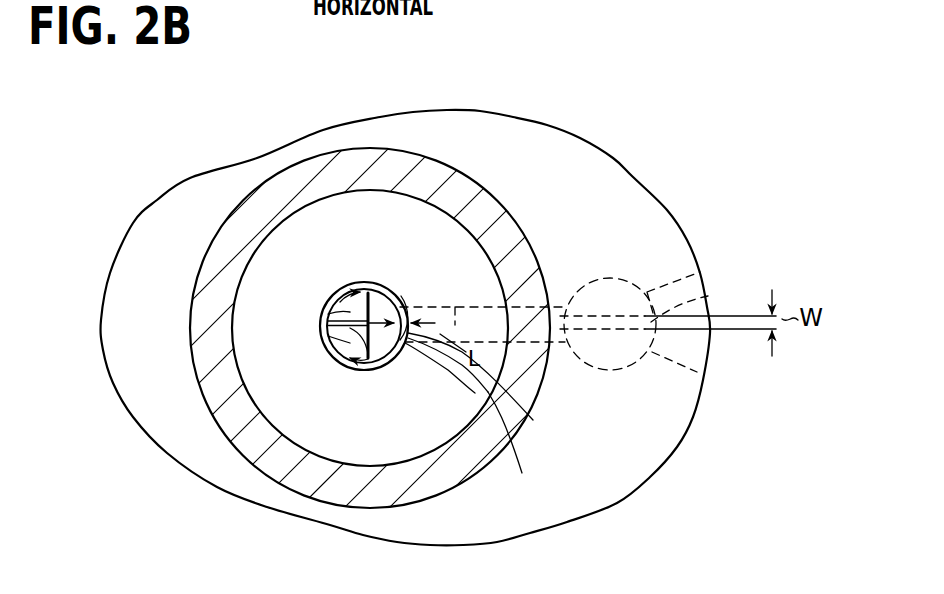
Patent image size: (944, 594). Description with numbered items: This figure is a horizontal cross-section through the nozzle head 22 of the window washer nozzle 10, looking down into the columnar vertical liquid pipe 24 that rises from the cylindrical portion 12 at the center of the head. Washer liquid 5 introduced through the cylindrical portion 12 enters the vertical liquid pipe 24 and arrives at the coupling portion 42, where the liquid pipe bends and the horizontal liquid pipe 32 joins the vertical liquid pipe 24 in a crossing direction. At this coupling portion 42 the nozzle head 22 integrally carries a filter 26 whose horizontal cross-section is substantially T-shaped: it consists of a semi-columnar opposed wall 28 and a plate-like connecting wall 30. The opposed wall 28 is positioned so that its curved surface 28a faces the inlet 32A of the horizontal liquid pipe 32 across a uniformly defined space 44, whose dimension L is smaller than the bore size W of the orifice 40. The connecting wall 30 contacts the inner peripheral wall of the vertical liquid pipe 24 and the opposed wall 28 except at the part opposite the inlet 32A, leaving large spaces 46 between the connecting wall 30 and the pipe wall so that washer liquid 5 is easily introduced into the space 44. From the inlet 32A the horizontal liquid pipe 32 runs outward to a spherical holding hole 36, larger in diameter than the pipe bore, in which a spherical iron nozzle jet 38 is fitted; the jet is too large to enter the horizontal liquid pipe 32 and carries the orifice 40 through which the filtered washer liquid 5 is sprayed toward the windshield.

The window washer nozzle 10 is at (108, 112).
The nozzle head 22 is at (223, 150).
The cylindrical portion 12 is at (483, 186).
The vertical liquid pipe 24 is at (372, 282).
The washer liquid 5 is at (340, 292).
The large spaces 46 is at (322, 326).
The space 44 is at (400, 295).
The inlet 32A is at (405, 298).
The horizontal liquid pipe 32 is at (456, 306).
The holding hole 36 is at (578, 290).
The nozzle jet 38 is at (618, 283).
The orifice 40 is at (703, 314).
The opposed wall 28 is at (395, 348).
The curved surface 28a is at (488, 392).
The coupling portion 42 is at (533, 420).
The connecting wall 30 is at (388, 352).
The filter 26 is at (382, 397).